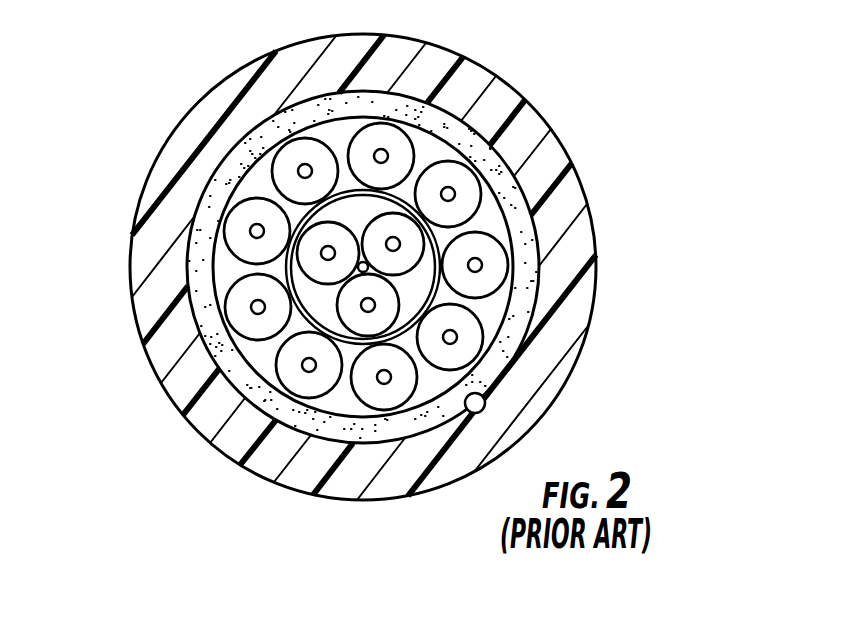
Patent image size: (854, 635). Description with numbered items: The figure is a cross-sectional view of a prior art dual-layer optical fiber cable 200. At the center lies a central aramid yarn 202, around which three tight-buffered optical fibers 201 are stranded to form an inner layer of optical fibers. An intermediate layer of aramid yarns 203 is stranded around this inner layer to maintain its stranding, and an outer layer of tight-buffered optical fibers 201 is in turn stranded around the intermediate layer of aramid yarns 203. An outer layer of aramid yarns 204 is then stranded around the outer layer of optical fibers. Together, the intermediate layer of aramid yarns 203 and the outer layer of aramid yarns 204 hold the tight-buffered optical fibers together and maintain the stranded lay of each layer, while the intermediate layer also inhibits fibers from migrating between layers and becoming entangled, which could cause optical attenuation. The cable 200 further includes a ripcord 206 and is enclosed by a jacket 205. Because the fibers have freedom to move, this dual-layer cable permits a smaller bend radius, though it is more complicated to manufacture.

The dual-layer optical fiber cable 200 is at (203, 70).
The tight-buffered optical fibers 201 is at (483, 313).
The central aramid yarn 202 is at (377, 260).
The intermediate layer of aramid yarns 203 is at (413, 197).
The outer layer of aramid yarns 204 is at (425, 121).
The jacket 205 is at (398, 71).
The ripcord 206 is at (488, 398).